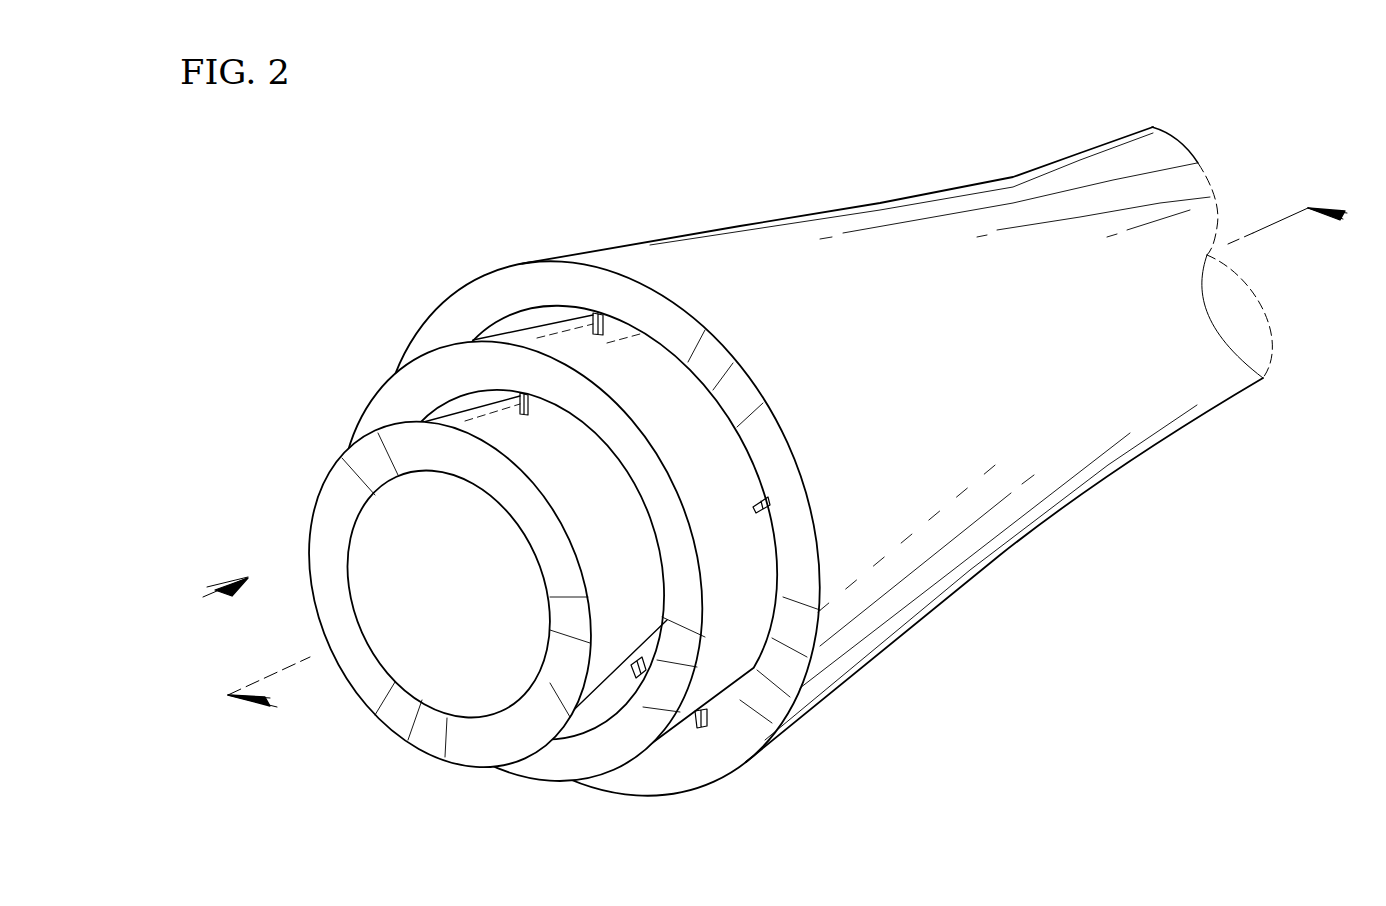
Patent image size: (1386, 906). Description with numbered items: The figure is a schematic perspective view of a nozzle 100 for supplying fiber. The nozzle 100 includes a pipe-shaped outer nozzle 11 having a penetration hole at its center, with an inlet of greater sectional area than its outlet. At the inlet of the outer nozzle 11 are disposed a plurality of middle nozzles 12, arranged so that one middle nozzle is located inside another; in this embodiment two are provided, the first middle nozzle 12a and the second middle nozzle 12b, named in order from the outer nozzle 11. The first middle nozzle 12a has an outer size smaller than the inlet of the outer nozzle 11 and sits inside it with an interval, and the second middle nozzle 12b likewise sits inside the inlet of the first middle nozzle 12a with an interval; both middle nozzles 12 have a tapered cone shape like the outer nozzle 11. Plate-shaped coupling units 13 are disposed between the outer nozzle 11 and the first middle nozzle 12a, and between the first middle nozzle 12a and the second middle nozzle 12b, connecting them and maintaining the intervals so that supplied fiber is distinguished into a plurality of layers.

The nozzle 100 is at (886, 156).
The outer nozzle 11 is at (790, 243).
The middle nozzles 12 is at (296, 270).
The first middle nozzle 12a is at (395, 401).
The second middle nozzle 12b is at (333, 510).
The coupling unit 13 is at (593, 313).